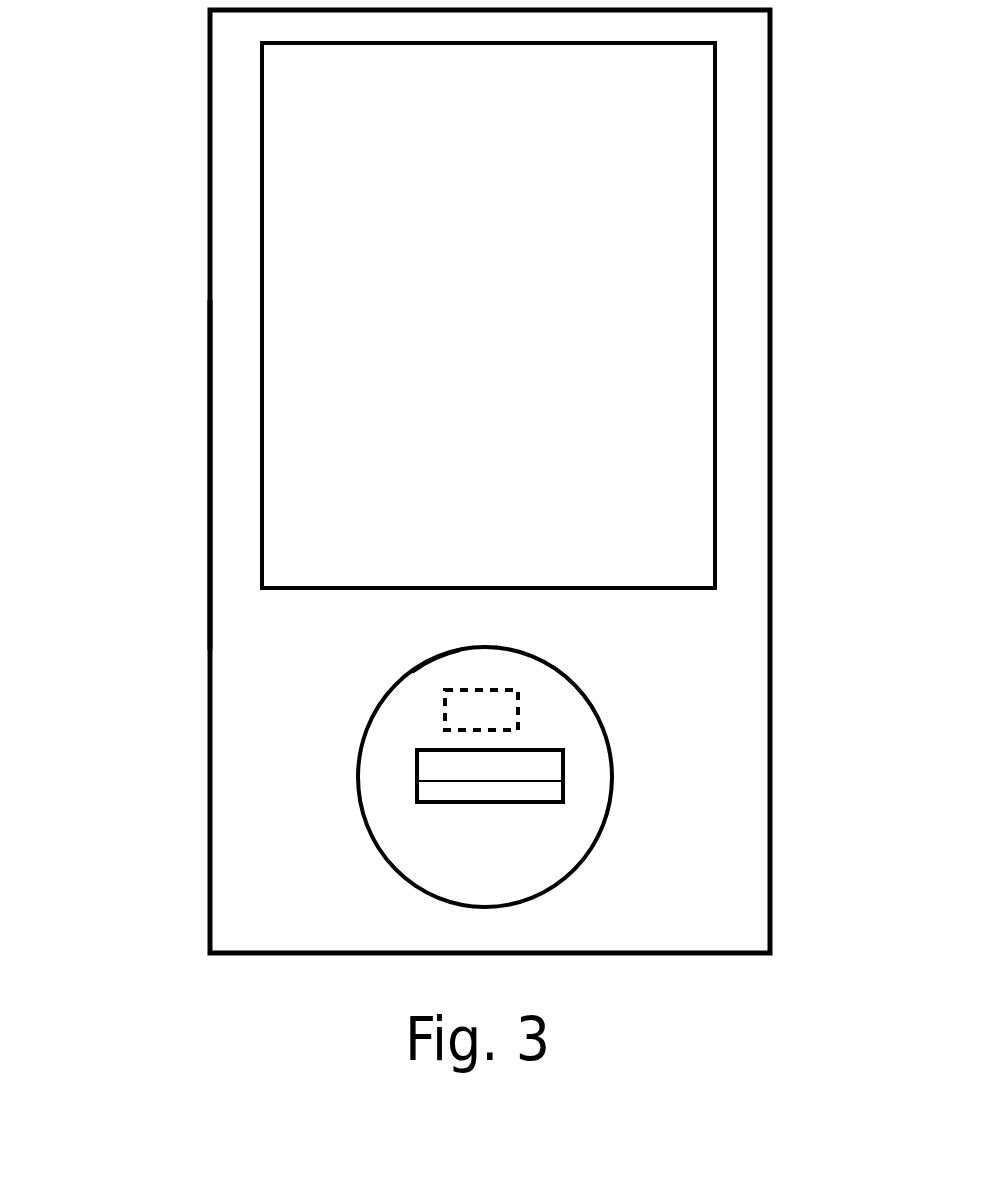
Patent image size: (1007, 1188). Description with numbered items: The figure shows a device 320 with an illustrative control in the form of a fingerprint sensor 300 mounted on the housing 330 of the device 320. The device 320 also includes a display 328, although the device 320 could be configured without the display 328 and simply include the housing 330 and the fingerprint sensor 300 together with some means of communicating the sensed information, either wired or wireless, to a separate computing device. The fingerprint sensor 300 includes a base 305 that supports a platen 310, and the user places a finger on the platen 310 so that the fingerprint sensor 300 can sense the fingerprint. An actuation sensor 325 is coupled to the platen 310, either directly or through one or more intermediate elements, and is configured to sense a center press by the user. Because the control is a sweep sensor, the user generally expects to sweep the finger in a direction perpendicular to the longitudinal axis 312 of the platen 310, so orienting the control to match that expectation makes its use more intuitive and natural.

The fingerprint sensor 300 is at (619, 786).
The base 305 is at (410, 672).
The platen 310 is at (417, 781).
The longitudinal axis 312 is at (490, 781).
The device 320 is at (794, 587).
The actuation sensor 325 is at (518, 690).
The display 328 is at (488, 315).
The housing 330 is at (210, 483).